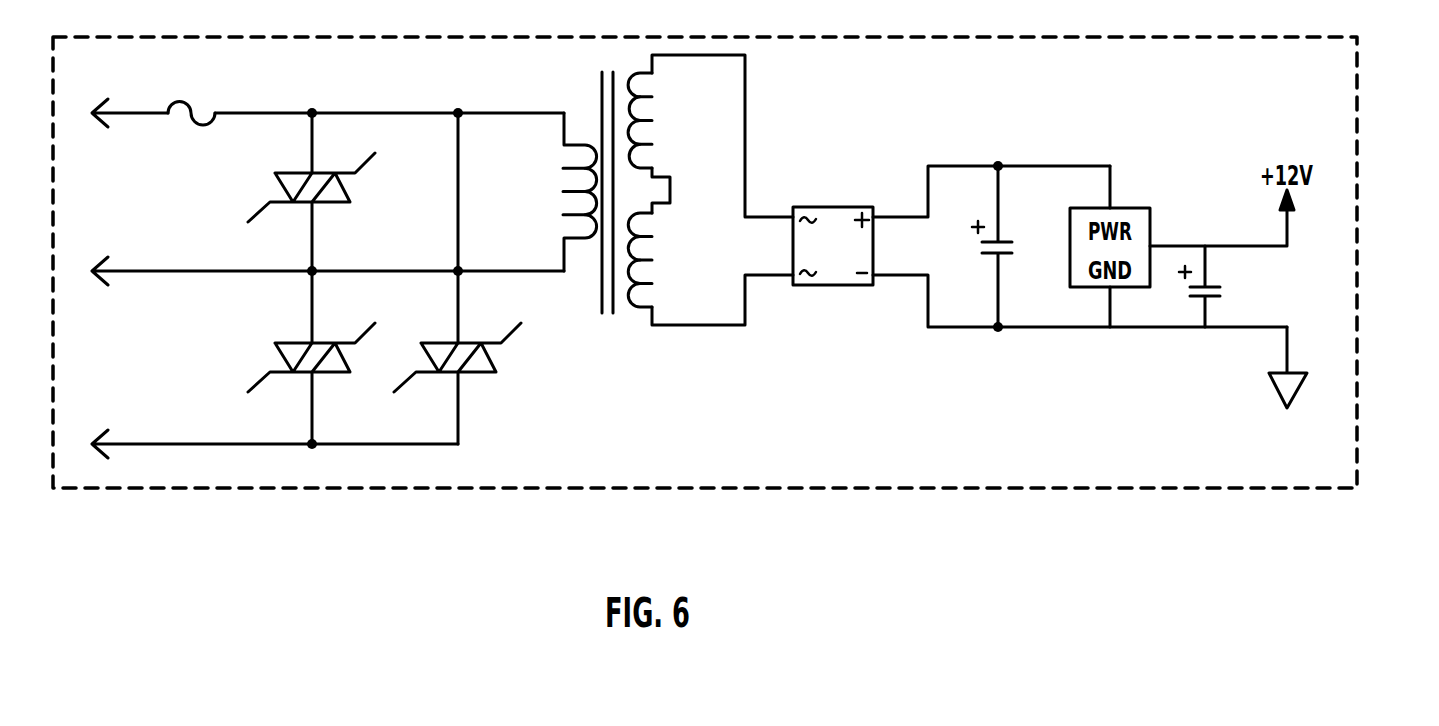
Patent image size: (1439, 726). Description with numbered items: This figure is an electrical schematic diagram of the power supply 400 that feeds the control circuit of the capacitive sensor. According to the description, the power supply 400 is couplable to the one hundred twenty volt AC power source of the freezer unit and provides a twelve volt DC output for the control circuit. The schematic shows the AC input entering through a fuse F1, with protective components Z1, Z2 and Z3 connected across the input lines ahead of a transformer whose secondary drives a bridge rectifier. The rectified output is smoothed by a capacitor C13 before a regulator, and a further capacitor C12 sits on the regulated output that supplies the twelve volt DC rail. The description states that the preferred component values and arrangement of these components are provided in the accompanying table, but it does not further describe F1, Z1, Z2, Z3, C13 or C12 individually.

The power supply 400 is at (1355, 128).
The fuse F1 is at (191, 93).
The triac / surge suppressor Z1 is at (321, 187).
The triac / surge suppressor Z2 is at (321, 357).
The triac / surge suppressor Z3 is at (467, 357).
The filter capacitor C13 is at (1013, 246).
The output capacitor C12 is at (1219, 286).